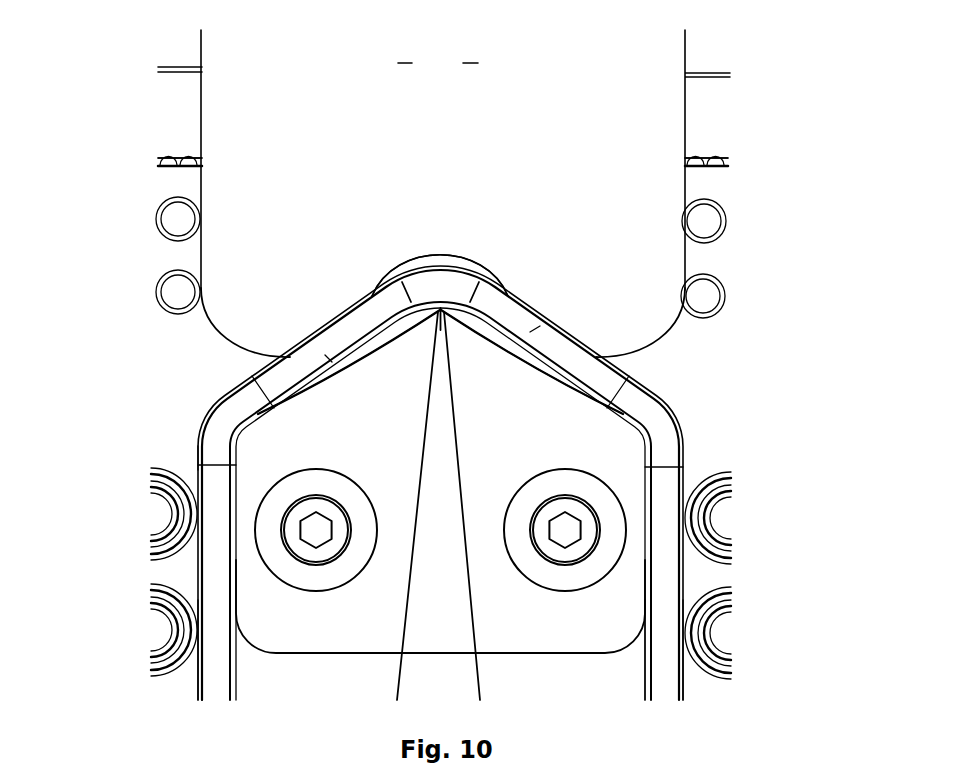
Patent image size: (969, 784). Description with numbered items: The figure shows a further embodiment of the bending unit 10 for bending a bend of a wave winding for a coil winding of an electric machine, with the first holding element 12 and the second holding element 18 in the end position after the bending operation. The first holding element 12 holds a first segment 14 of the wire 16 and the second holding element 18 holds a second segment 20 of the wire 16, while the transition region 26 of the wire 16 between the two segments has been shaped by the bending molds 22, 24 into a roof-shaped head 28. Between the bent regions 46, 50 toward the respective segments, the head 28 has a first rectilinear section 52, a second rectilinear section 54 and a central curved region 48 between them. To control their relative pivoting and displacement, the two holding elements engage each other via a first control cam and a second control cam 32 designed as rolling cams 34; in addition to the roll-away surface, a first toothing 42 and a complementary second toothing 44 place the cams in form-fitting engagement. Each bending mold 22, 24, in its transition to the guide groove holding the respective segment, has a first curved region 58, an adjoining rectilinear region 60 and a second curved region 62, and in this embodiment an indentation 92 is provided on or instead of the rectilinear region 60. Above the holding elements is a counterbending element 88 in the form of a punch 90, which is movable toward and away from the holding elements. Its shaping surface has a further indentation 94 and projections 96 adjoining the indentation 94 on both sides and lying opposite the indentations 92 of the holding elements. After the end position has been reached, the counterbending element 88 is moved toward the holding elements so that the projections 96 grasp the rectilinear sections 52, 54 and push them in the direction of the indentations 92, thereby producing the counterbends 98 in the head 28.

The bending unit 10 is at (798, 352).
The first holding element 12 is at (125, 693).
The first segment 14 is at (206, 687).
The wire 16 is at (240, 683).
The second holding element 18 is at (742, 633).
The second segment 20 is at (670, 693).
The bending mold 22 is at (335, 635).
The bending mold 24 is at (560, 635).
The transition region 26 is at (304, 326).
The head 28 is at (458, 264).
The second control cam 32 is at (700, 158).
The rolling cam 34 is at (160, 157).
The first toothing 42 is at (185, 157).
The second toothing 44 is at (727, 158).
The bent region 46 is at (217, 427).
The central curved region 48 is at (422, 280).
The bent region 50 is at (672, 417).
The first rectilinear section 52 is at (277, 363).
The second rectilinear section 54 is at (570, 337).
The first curved region 58 is at (610, 422).
The rectilinear region 60 is at (351, 402).
The second curved region 62 is at (470, 352).
The counterbending element 88 is at (660, 92).
The punch 90 is at (438, 64).
The indentation 92 is at (521, 378).
The further indentation 94 is at (485, 262).
The projections 96 is at (588, 345).
The counterbends 98 is at (327, 358).